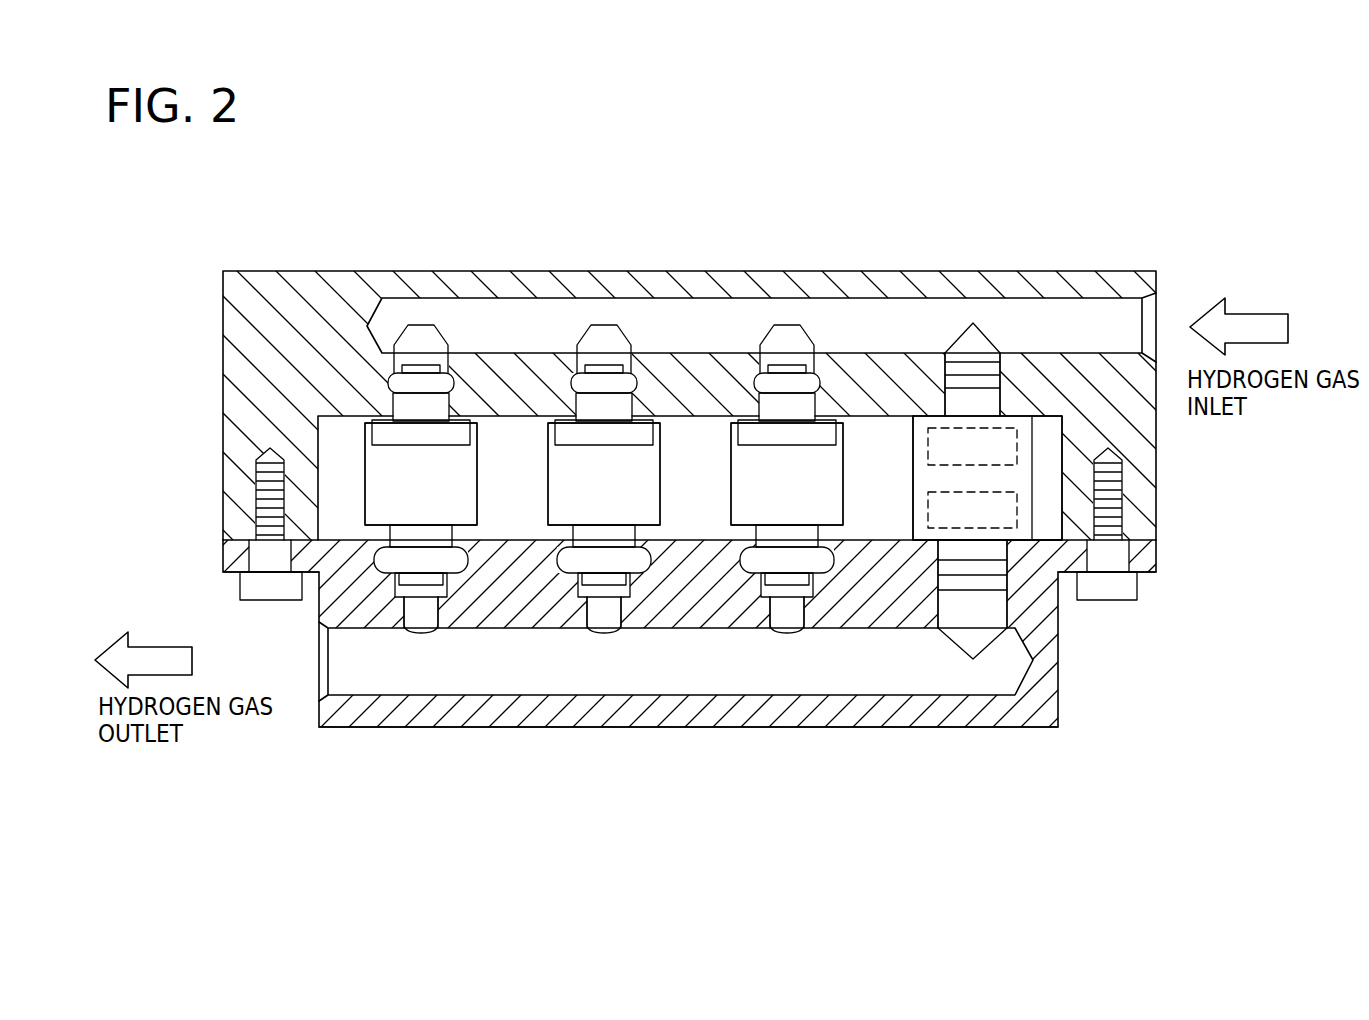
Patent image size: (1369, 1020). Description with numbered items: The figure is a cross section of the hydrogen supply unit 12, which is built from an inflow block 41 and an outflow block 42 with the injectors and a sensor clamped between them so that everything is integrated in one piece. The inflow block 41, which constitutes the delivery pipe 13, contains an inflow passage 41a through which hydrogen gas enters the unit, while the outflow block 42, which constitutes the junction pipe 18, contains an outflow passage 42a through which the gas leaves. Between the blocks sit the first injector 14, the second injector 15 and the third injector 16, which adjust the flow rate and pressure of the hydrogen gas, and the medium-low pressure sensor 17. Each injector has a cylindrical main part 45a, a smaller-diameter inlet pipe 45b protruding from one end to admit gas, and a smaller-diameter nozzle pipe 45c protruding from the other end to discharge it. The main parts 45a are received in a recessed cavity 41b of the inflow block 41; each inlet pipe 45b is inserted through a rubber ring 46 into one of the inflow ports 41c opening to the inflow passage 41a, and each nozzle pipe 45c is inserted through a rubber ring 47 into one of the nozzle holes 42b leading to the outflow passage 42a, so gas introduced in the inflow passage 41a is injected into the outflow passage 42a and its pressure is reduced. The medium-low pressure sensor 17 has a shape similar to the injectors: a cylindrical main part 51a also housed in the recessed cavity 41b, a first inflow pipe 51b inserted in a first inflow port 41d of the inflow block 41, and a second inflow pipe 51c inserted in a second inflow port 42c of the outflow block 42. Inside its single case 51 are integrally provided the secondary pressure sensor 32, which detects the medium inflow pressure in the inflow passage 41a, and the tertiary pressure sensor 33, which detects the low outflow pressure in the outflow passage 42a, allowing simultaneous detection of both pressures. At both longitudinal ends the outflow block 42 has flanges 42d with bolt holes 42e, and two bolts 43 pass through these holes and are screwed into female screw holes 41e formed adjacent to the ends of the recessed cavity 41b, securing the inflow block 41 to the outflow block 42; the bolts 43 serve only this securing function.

The hydrogen supply unit 12 is at (738, 229).
The delivery pipe 13 is at (945, 271).
The first injector 14 is at (363, 479).
The second injector 15 is at (546, 479).
The third injector 16 is at (729, 479).
The medium-low pressure sensor 17 is at (910, 503).
The junction pipe 18 is at (520, 728).
The secondary pressure sensor 32 is at (928, 436).
The tertiary pressure sensor 33 is at (928, 523).
The inflow block 41 is at (545, 270).
The inflow passage 41a is at (757, 299).
The recessed cavity 41b is at (322, 462).
The inflow ports 41c is at (398, 352).
The first inflow port 41d is at (948, 352).
The female screw holes 41e is at (258, 491).
The outflow block 42 is at (780, 728).
The outflow passage 42a is at (650, 696).
The nozzle holes 42b is at (434, 626).
The second inflow port 42c is at (942, 630).
The flanges 42d is at (232, 573).
The bolt holes 42e is at (255, 550).
The bolts 43 is at (282, 601).
The main part 45a is at (365, 493).
The inlet pipe 45b is at (421, 368).
The nozzle pipe 45c is at (415, 583).
The rubber ring 46 is at (450, 385).
The rubber ring 47 is at (455, 562).
The case 51 is at (1076, 500).
The main part 51a is at (1027, 462).
The first inflow pipe 51b is at (968, 367).
The second inflow pipe 51c is at (970, 592).